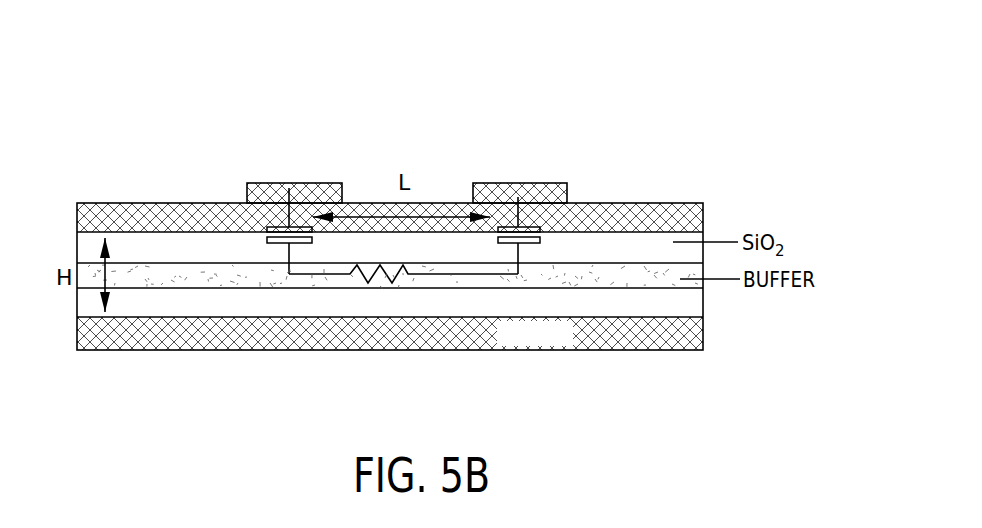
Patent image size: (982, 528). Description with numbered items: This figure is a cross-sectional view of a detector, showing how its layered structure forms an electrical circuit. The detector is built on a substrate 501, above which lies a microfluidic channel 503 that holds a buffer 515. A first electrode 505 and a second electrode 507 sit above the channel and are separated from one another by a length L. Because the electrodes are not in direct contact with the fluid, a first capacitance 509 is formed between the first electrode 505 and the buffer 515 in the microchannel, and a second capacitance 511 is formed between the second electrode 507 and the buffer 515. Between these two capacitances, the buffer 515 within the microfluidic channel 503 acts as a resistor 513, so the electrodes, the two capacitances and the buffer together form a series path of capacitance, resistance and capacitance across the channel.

The substrate 501 is at (163, 345).
The microfluidic channel 503 is at (178, 248).
The first electrode 505 is at (278, 188).
The second electrode 507 is at (527, 185).
The first capacitance 509 is at (298, 227).
The second capacitance 511 is at (540, 235).
The resistor 513 is at (372, 276).
The buffer 515 is at (628, 280).